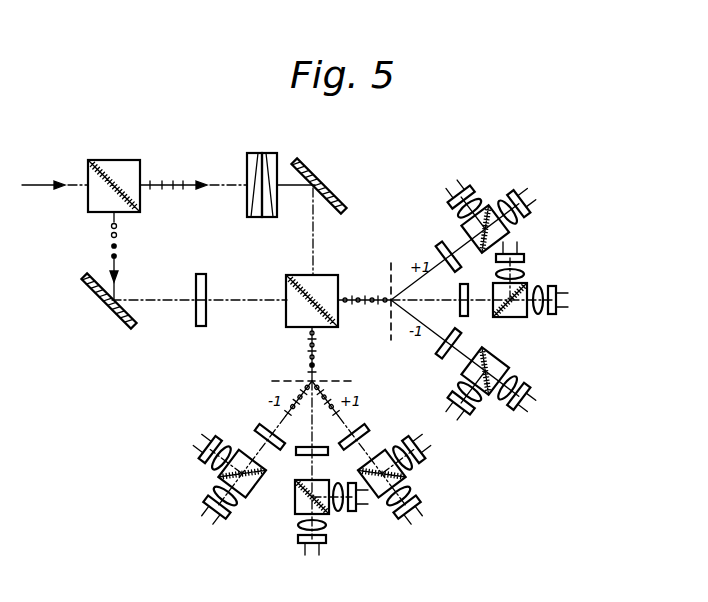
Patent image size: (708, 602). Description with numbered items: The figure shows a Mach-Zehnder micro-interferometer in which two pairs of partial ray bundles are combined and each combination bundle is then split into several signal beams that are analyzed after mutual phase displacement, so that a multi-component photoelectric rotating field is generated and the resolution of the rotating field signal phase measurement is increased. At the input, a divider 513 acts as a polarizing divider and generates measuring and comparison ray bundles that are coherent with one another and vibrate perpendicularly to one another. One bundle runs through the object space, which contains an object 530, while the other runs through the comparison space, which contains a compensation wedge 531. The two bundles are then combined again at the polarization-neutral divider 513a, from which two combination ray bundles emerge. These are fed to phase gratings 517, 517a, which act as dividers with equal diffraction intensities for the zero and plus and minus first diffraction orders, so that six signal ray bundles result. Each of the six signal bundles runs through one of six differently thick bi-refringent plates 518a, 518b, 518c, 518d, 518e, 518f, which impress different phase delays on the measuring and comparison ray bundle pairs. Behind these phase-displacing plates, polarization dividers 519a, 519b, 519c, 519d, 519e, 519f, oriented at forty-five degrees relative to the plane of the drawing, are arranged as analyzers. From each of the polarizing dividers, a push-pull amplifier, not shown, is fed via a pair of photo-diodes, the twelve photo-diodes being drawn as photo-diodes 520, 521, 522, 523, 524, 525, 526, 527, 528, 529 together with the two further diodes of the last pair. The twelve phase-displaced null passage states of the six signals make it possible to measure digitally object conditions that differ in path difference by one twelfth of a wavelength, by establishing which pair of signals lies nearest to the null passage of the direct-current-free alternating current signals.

The divider 513 is at (112, 160).
The compensation wedge 531 is at (266, 152).
The object 530 is at (196, 306).
The polarization-neutral divider 513a is at (300, 276).
The phase grating 517a is at (390, 268).
The phase grating 517 is at (276, 380).
The bi-refringent plate 518a is at (256, 437).
The bi-refringent plate 518b is at (298, 454).
The bi-refringent plate 518c is at (358, 433).
The bi-refringent plate 518d is at (440, 350).
The bi-refringent plate 518e is at (470, 312).
The bi-refringent plate 518f is at (445, 244).
The polarization divider 519a is at (224, 478).
The polarization divider 519b is at (296, 506).
The polarization divider 519c is at (400, 480).
The polarization divider 519d is at (490, 396).
The polarization divider 519e is at (524, 288).
The polarization divider 519f is at (506, 240).
The photo-diode 520 is at (200, 458).
The photo-diode 521 is at (208, 505).
The photo-diode 522 is at (323, 550).
The photo-diode 523 is at (352, 512).
The photo-diode 524 is at (416, 520).
The photo-diode 525 is at (428, 456).
The photo-diode 526 is at (468, 414).
The photo-diode 527 is at (540, 395).
The photo-diode 528 is at (562, 316).
The photo-diode 529 is at (526, 260).